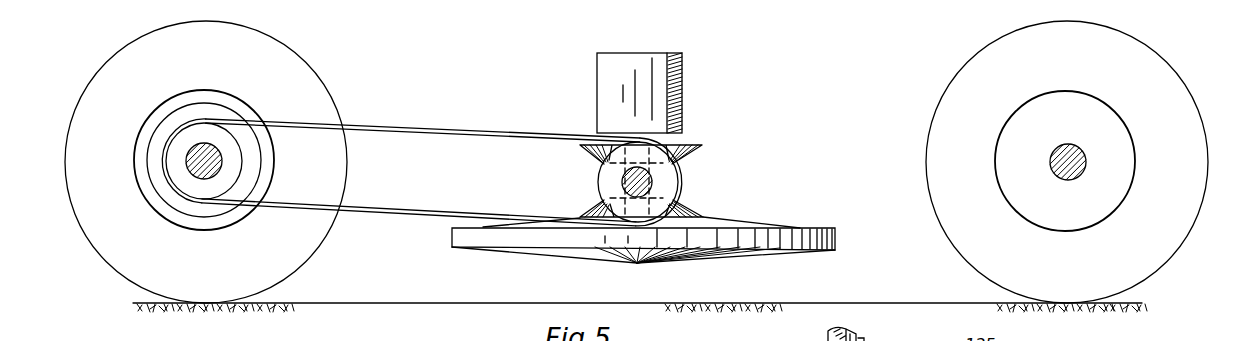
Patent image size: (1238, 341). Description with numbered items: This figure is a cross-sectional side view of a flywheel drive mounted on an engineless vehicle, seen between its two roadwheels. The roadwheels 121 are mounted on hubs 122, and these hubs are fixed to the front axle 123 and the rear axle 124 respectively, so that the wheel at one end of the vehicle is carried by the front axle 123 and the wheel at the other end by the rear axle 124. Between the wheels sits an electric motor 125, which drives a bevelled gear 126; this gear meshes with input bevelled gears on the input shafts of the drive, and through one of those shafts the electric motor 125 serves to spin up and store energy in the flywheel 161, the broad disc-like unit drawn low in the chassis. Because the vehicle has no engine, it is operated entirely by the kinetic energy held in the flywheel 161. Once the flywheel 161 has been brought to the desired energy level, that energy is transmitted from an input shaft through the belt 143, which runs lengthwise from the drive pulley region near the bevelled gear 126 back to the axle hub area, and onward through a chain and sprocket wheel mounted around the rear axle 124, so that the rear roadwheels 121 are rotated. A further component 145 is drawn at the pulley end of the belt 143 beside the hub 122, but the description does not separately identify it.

The roadwheel 121 is at (297, 69).
The hub 122 is at (233, 102).
The front axle 123 is at (1068, 147).
The rear axle 124 is at (216, 163).
The electric motor 125 is at (630, 62).
The bevelled gear 126 is at (697, 145).
The belt 143 is at (402, 130).
The wheel pulley 145 is at (152, 155).
The flywheel 161 is at (786, 215).